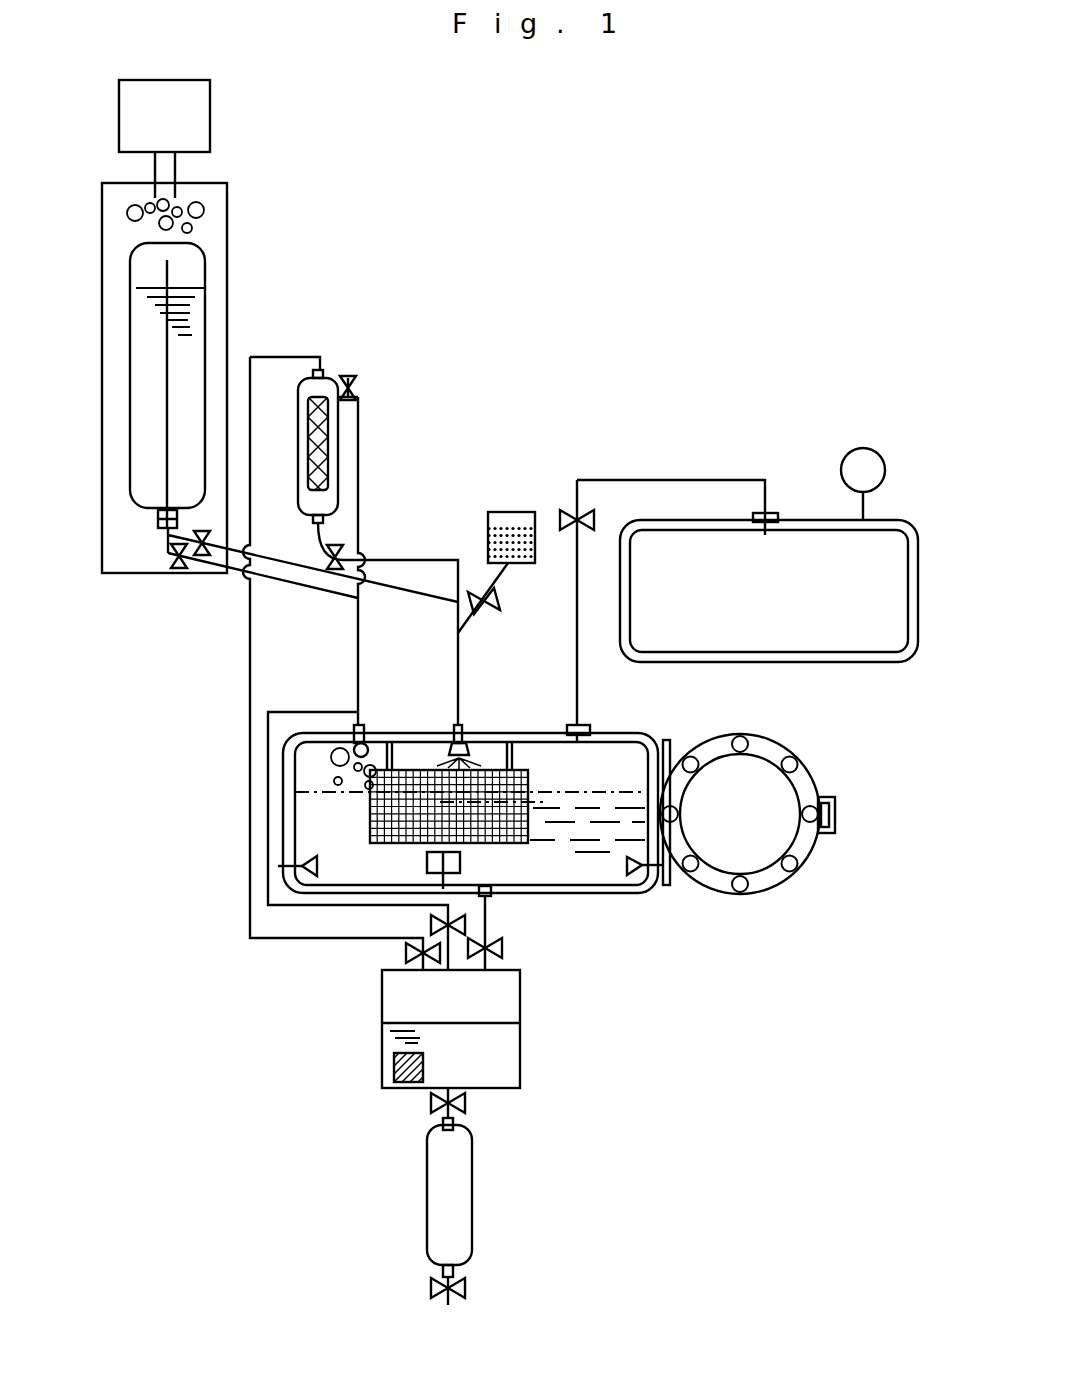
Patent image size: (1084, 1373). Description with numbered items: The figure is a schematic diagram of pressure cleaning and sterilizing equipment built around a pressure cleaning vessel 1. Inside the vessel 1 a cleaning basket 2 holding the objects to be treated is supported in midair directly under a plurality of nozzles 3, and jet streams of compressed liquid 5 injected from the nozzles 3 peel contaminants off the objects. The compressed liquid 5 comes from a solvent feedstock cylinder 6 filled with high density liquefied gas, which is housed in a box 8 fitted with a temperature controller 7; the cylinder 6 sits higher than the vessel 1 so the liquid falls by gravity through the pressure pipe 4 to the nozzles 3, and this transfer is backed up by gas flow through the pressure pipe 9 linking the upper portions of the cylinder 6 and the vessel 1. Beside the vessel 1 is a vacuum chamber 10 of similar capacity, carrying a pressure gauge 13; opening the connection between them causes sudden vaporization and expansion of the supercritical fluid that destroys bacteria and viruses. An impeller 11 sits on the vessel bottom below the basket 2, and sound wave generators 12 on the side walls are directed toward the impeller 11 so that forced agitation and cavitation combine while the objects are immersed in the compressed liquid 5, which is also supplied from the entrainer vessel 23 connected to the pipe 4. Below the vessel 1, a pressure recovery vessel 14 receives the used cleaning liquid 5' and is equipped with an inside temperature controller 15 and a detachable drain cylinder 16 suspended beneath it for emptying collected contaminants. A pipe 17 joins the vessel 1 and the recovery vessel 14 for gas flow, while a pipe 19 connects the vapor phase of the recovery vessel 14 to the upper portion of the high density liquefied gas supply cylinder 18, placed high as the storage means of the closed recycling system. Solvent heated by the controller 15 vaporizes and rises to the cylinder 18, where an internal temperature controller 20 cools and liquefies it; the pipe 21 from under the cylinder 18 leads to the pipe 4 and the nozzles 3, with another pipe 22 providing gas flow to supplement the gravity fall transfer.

The pressure cleaning vessel 1 is at (658, 735).
The cleaning basket 2 is at (490, 843).
The nozzles 3 is at (467, 743).
The pressure pipe 4 is at (423, 590).
The compressed liquid 5 is at (390, 567).
The used cleaning liquid 5' is at (481, 1049).
The solvent feedstock cylinder 6 is at (205, 372).
The temperature controller 7 is at (210, 125).
The box 8 is at (227, 238).
The pressure pipe 9 is at (305, 590).
The vacuum chamber 10 is at (848, 662).
The impeller 11 is at (427, 862).
The sound wave generators 12 is at (317, 866).
The pressure gauge 13 is at (878, 450).
The pressure recovery vessel 14 is at (520, 995).
The temperature controller 15 is at (394, 1067).
The drain cylinder 16 is at (465, 1165).
The pipe 17 is at (340, 905).
The high density liquefied gas supply cylinder 18 is at (303, 516).
The pipe 19 is at (251, 800).
The temperature controller 20 is at (308, 465).
The pipe 21 is at (428, 557).
The pipe 22 is at (358, 447).
The entrainer vessel 23 is at (532, 540).